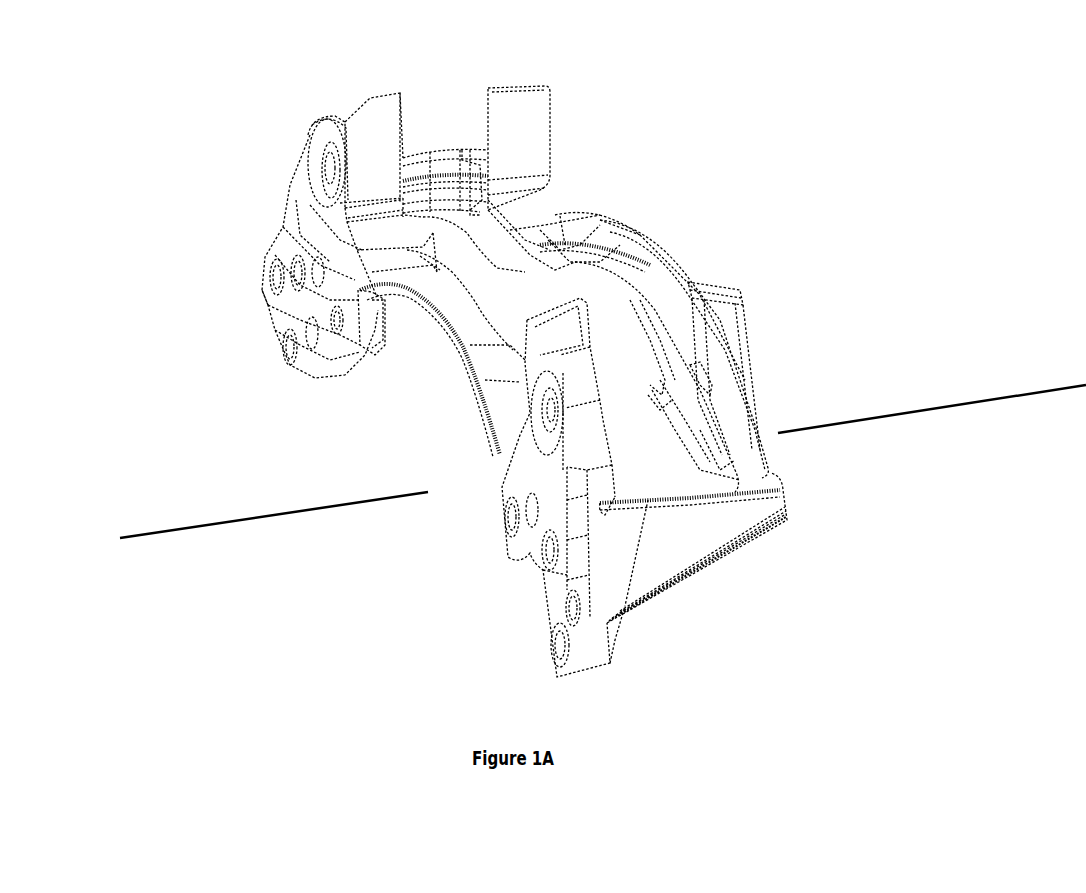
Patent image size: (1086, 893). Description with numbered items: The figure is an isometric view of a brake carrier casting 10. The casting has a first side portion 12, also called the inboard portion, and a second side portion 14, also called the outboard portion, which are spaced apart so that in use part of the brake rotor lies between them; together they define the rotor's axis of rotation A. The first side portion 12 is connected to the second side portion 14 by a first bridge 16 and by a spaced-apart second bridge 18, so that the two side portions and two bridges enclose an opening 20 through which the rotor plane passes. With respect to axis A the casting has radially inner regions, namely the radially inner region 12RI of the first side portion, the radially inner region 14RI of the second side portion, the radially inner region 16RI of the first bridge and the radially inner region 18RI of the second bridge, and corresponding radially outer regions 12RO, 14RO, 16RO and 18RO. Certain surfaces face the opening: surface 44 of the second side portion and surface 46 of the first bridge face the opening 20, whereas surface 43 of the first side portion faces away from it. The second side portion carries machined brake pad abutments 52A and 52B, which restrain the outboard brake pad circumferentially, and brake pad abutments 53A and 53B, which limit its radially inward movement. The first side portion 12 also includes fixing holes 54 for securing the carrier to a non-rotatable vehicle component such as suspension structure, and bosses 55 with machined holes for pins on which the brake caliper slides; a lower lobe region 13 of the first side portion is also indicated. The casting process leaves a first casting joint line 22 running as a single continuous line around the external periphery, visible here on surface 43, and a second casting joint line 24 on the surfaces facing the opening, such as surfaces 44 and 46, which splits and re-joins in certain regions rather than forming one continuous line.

The brake carrier casting 10 is at (675, 165).
The first side portion 12 is at (462, 482).
The radially inner region of the first side portion 12RI is at (377, 312).
The radially outer region of the first side portion 12RO is at (457, 300).
The lower lobe of first upright 13 is at (320, 302).
The second side portion 14 is at (743, 223).
The radially inner region of the second side portion 14RI is at (660, 410).
The radially outer region of the second side portion 14RO is at (648, 235).
The first bridge 16 is at (412, 158).
The radially inner region of the first bridge 16RI is at (442, 207).
The radially outer region of the first bridge 16RO is at (442, 155).
The second bridge 18 is at (672, 572).
The radially inner region of the second bridge 18RI is at (713, 573).
The radially outer region of the second bridge 18RO is at (687, 533).
The opening 20 is at (652, 455).
The first casting joint line 22 is at (473, 380).
The second casting joint line 24 is at (583, 258).
The surface of the first side portion facing away from the opening 43 is at (493, 400).
The surface of the second side portion facing the opening 44 is at (510, 215).
The surface of the first bridge facing the opening 46 is at (407, 173).
The brake pad abutment 52A is at (527, 122).
The brake pad abutment 52B is at (713, 282).
The brake pad abutment 53A is at (557, 213).
The brake pad abutment 53B is at (667, 367).
The fixing holes 54 is at (343, 327).
The bosses 55 is at (320, 162).
The axis of rotation A is at (1032, 395).